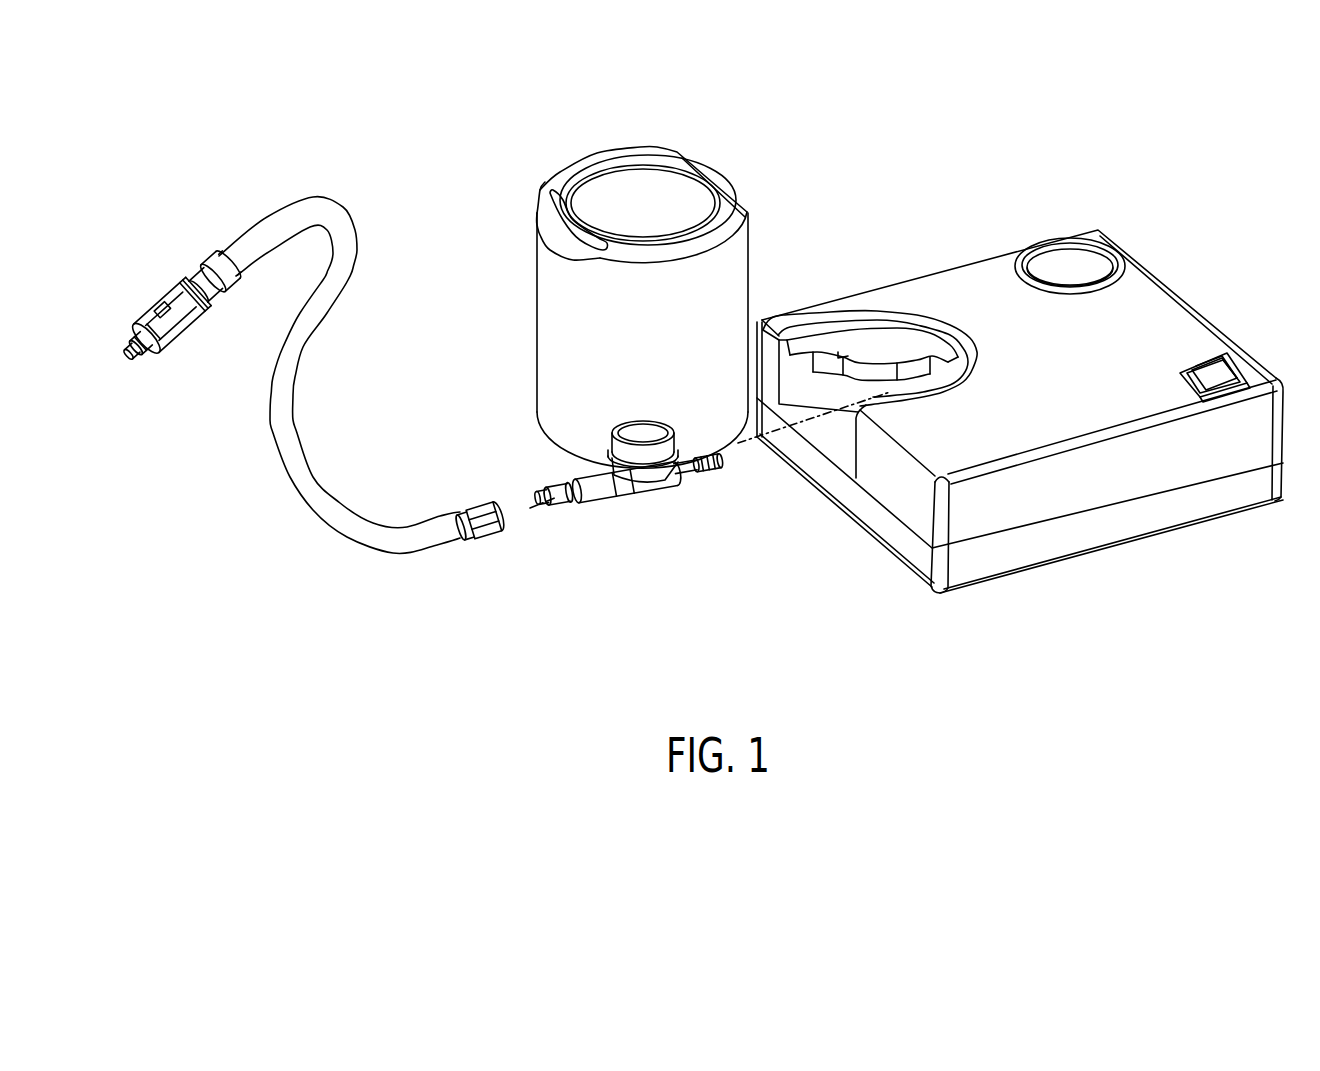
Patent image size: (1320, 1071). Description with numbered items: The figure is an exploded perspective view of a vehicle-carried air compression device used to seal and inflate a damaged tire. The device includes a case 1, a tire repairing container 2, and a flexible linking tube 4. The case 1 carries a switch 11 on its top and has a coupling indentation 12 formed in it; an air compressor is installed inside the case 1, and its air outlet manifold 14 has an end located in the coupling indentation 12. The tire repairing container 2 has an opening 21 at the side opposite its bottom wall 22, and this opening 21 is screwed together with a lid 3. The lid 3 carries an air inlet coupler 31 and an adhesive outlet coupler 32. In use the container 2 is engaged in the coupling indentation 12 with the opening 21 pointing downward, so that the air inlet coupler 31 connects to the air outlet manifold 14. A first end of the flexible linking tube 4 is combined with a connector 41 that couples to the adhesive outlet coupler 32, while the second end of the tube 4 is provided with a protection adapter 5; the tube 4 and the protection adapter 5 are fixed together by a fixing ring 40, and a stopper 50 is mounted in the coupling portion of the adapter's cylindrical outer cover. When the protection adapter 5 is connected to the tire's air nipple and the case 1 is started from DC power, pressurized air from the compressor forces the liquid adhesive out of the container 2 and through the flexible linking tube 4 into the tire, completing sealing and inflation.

The case 1 is at (1158, 327).
The switch 11 is at (1217, 360).
The coupling indentation 12 is at (847, 420).
The air outlet manifold 14 is at (920, 365).
The tire repairing container 2 is at (590, 251).
The opening 21 is at (600, 458).
The bottom wall 22 is at (630, 192).
The lid 3 is at (631, 544).
The air inlet coupler 31 is at (712, 468).
The adhesive outlet coupler 32 is at (578, 500).
The flexible linking tube 4 is at (342, 413).
The fixing ring 40 is at (193, 272).
The connector 41 is at (485, 520).
The protection adapter 5 is at (172, 315).
The stopper 50 is at (127, 347).